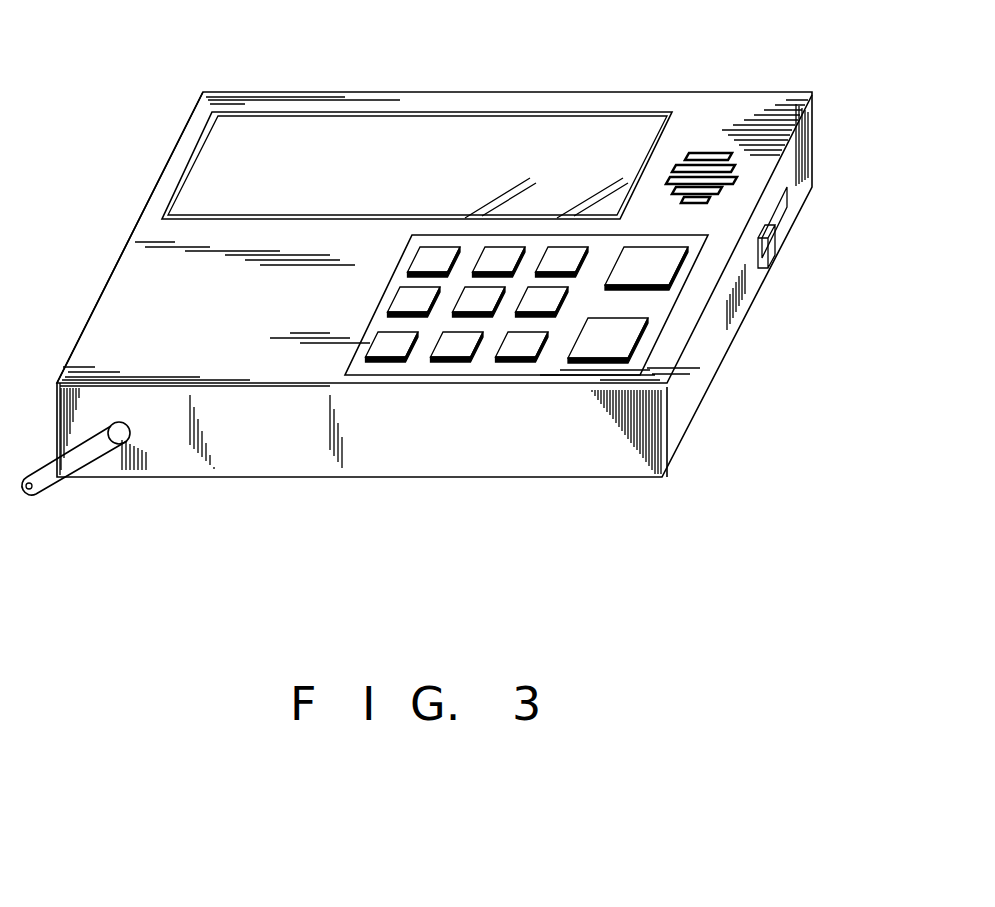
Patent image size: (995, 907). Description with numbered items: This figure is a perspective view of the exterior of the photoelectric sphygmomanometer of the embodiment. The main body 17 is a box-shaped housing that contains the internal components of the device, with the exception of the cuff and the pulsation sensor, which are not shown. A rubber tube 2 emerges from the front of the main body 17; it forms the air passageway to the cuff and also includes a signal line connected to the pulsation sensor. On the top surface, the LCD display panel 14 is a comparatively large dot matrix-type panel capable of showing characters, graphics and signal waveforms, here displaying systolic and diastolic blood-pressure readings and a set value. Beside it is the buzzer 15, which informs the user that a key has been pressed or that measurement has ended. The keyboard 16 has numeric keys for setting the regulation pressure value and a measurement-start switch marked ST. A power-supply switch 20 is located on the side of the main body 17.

The rubber tube 2 is at (70, 478).
The LCD display panel 14 is at (197, 167).
The buzzer 15 is at (708, 152).
The keyboard 16 is at (677, 308).
The main body 17 is at (513, 92).
The power-supply switch 20 is at (780, 228).